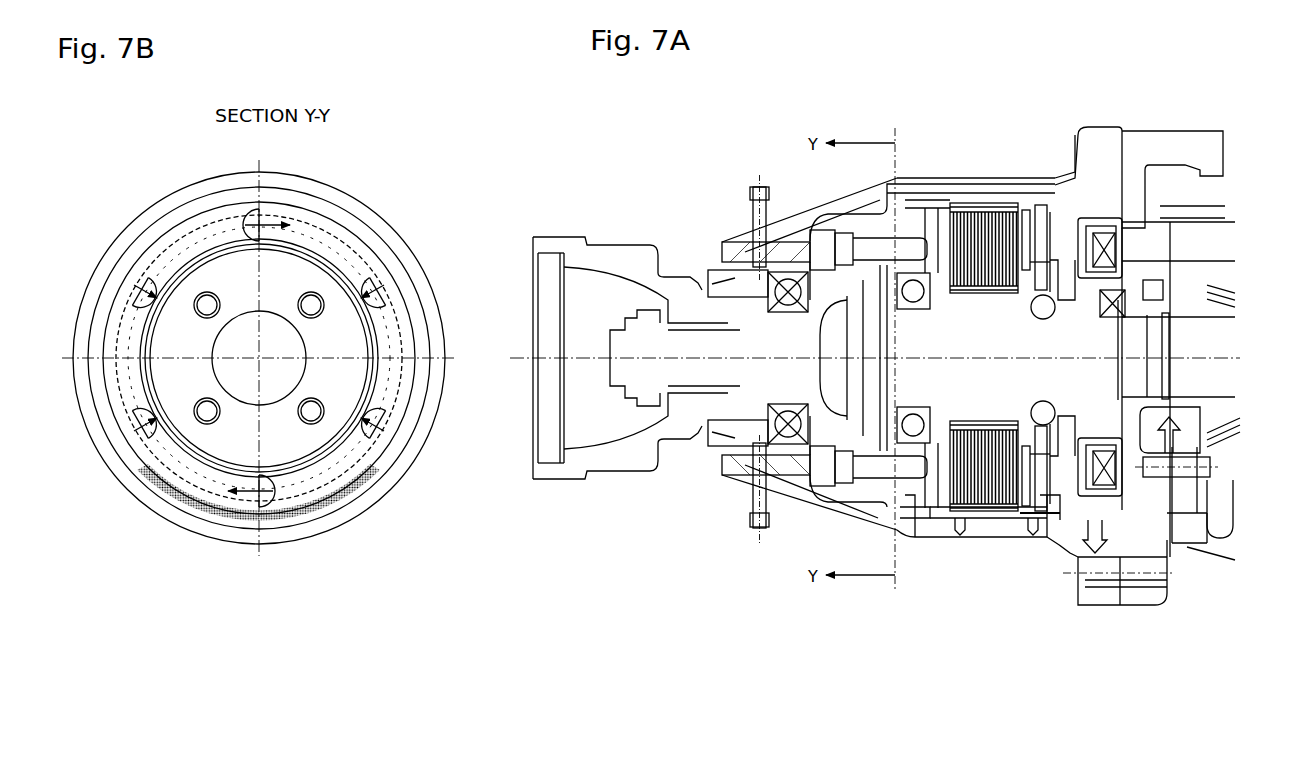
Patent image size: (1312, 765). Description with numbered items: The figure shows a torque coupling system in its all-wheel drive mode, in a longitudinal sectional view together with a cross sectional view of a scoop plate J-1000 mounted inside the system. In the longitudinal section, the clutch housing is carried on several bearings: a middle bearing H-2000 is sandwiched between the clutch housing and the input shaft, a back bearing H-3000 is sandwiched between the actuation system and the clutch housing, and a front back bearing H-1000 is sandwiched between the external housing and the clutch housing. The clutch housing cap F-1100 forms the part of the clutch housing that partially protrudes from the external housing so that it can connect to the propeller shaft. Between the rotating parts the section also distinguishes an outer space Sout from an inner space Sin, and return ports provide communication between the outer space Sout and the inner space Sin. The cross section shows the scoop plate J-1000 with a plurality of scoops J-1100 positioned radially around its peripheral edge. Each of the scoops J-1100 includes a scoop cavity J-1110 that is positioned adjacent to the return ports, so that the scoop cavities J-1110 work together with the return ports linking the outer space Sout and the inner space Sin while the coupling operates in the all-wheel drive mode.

In FIG. 7B, the scoop plate J-1000 is at (297, 469).
In FIG. 7B, the scoops J-1100 is at (240, 500).
In FIG. 7A, the clutch housing cap F-1100 is at (853, 290).
In FIG. 7A, the front back bearing H-1000 is at (1113, 423).
In FIG. 7A, the middle bearing H-2000 is at (900, 533).
In FIG. 7A, the back bearing H-3000 is at (790, 430).
In FIG. 7A, the outer space Sout is at (910, 500).
In FIG. 7A, the scoop cavity J-1110 is at (917, 510).
In FIG. 7A, the inner space Sin is at (1040, 493).